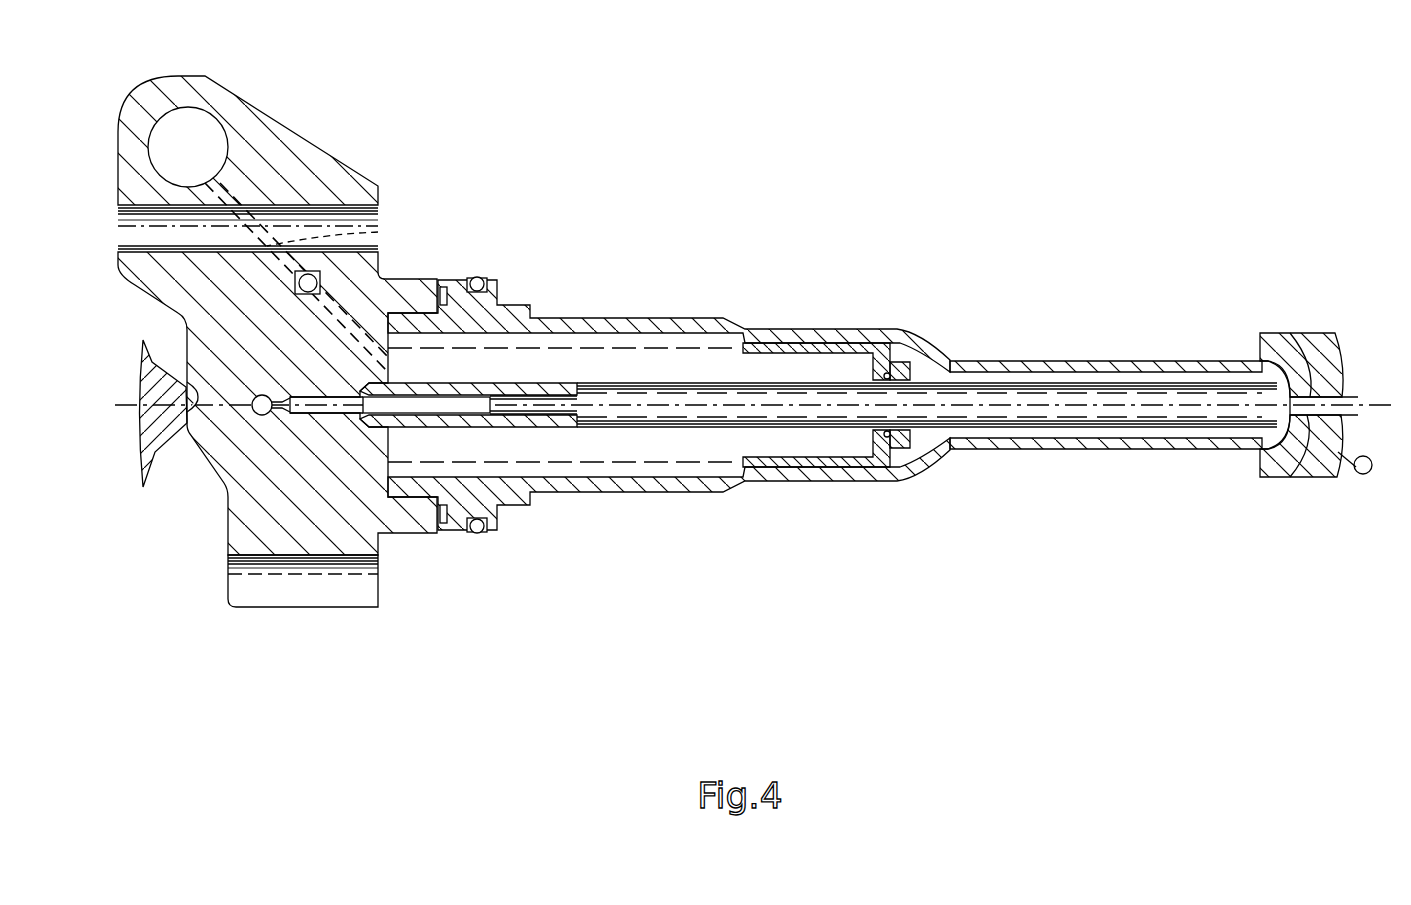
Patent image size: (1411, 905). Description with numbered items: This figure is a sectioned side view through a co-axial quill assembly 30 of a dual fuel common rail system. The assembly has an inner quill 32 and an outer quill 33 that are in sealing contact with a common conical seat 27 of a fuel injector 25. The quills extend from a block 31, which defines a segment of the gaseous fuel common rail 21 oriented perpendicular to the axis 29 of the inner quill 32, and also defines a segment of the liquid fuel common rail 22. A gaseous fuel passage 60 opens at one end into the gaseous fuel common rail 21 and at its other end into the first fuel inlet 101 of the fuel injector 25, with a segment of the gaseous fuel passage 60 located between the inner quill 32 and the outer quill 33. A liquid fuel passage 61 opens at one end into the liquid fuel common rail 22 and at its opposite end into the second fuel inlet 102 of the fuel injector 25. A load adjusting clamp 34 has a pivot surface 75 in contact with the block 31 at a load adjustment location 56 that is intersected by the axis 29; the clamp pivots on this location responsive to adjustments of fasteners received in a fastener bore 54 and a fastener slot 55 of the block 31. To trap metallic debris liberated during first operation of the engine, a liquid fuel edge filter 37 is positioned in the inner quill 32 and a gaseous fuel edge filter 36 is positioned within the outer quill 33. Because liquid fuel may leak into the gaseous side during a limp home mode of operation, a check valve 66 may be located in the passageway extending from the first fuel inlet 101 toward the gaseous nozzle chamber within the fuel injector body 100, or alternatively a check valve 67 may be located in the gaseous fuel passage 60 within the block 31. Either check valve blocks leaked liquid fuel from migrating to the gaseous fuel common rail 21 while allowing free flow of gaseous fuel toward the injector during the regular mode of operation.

The gaseous fuel common rail 21 is at (151, 145).
The liquid fuel common rail 22 is at (258, 413).
The fuel injector 25 is at (1257, 470).
The common conical seat 27 is at (1247, 362).
The axis 29 is at (1168, 405).
The co-axial quill assembly 30 is at (762, 260).
The block 31 is at (284, 124).
The inner quill 32 is at (1084, 396).
The outer quill 33 is at (960, 452).
The load adjusting clamp 34 is at (150, 457).
The gaseous fuel edge filter 36 is at (820, 345).
The liquid fuel edge filter 37 is at (447, 400).
The fastener bore 54 is at (160, 250).
The fastener slot 55 is at (303, 588).
The load adjustment location 56 is at (187, 420).
The gaseous fuel passage 60 is at (379, 232).
The liquid fuel passage 61 is at (548, 402).
The check valve 66 is at (1358, 474).
The check valve 67 is at (318, 271).
The pivot surface 75 is at (186, 386).
The fuel injector body 100 is at (1330, 425).
The first fuel inlet 101 is at (1290, 455).
The second fuel inlet 102 is at (1292, 360).